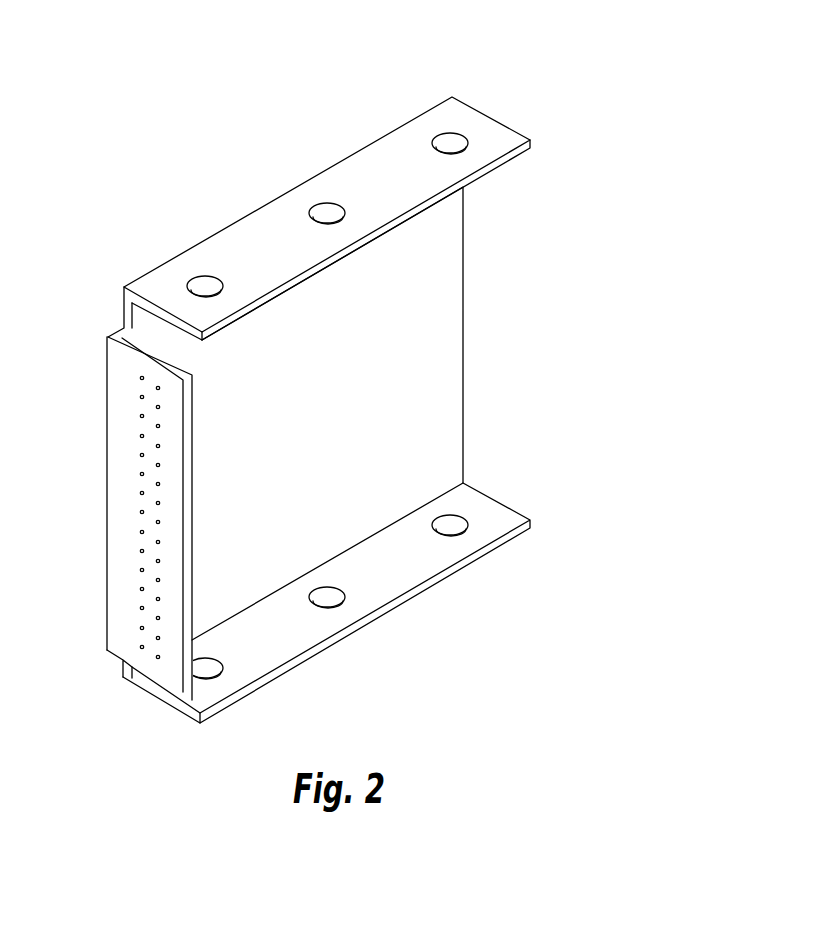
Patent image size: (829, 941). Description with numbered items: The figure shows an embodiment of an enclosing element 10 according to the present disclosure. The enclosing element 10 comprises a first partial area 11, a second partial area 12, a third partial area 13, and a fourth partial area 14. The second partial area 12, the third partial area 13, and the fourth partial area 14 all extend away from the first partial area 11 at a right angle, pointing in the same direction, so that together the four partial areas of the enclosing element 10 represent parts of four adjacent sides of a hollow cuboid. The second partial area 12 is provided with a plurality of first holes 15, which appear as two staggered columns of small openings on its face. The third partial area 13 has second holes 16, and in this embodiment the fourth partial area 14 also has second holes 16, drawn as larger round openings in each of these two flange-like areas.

The enclosing element 10 is at (537, 117).
The first partial area 11 is at (370, 392).
The second partial area 12 is at (122, 448).
The third partial area 13 is at (393, 187).
The fourth partial area 14 is at (393, 567).
The first holes 15 is at (143, 548).
The second holes 16 is at (207, 275).